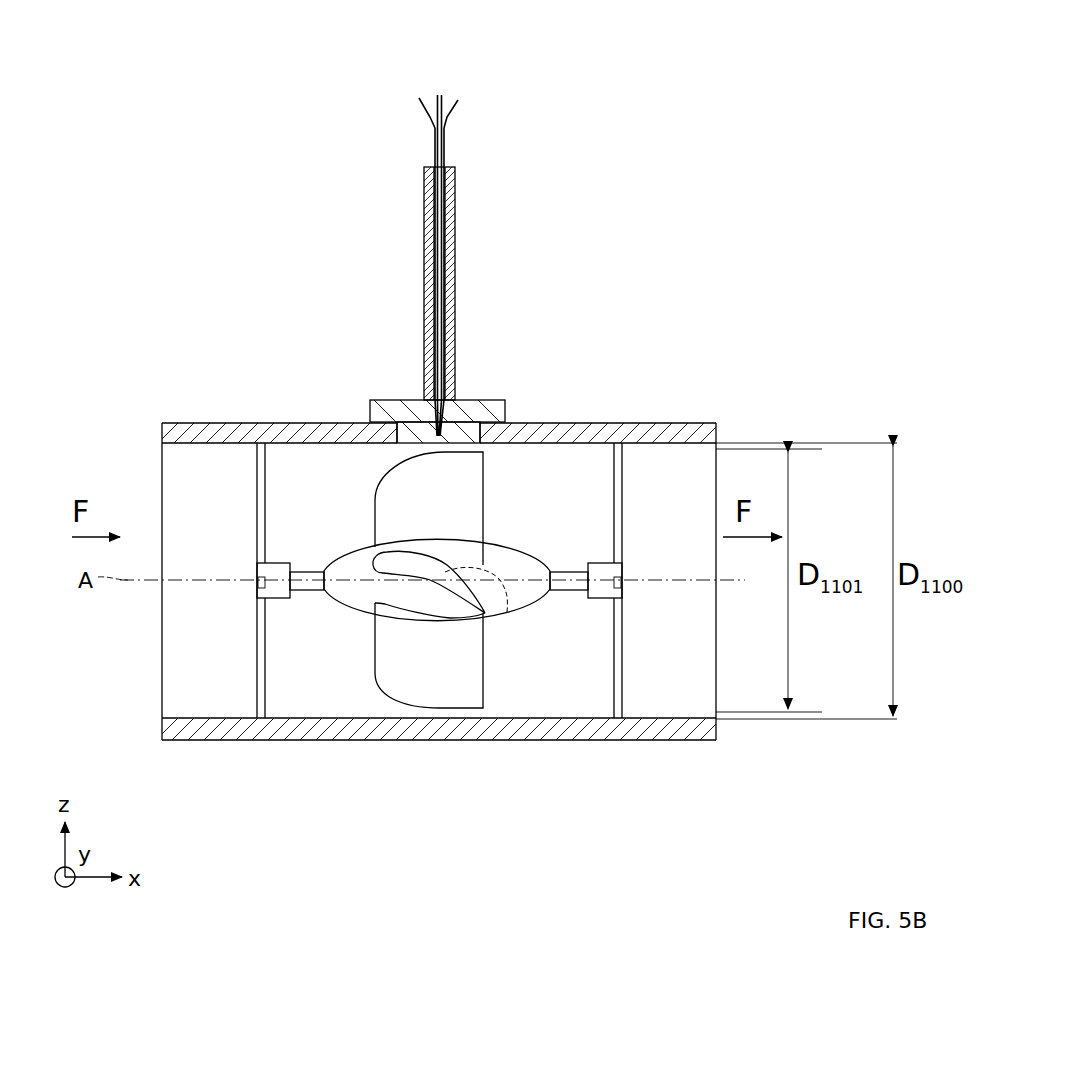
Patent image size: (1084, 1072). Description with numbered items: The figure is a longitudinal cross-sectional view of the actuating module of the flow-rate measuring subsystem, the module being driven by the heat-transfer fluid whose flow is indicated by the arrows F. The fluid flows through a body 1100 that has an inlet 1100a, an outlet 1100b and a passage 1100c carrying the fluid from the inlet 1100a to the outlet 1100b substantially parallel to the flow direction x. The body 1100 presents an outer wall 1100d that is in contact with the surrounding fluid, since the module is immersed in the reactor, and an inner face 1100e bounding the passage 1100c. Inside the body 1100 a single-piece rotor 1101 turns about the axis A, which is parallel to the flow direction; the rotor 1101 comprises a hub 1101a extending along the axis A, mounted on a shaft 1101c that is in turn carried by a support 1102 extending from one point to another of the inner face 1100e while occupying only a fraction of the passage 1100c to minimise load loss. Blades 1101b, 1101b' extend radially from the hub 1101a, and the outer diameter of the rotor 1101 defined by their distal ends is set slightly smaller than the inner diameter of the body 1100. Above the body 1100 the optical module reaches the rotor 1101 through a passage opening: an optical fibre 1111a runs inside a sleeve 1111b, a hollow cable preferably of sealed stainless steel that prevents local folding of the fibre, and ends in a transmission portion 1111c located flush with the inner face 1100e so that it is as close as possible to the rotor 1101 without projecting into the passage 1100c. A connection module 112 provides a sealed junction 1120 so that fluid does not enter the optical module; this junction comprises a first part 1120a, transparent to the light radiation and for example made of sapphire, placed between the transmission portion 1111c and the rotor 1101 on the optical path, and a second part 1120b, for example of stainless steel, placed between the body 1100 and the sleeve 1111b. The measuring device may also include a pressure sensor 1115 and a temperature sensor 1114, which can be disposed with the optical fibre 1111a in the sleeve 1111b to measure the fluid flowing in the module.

The body 1100 is at (435, 520).
The inlet 1100a is at (161, 630).
The outlet 1100b is at (716, 483).
The passage 1100c is at (188, 673).
The outer wall 1100d is at (182, 421).
The inner face 1100e is at (183, 446).
The rotor 1101 is at (476, 637).
The hub 1101a is at (529, 591).
The blade 1101b is at (414, 623).
The blade 1101b' is at (482, 695).
The shaft 1101c is at (573, 586).
The support 1102 is at (261, 656).
The optical fibre 1111a is at (440, 94).
The sleeve 1111b is at (450, 200).
The transmission portion 1111c is at (417, 440).
The temperature sensor 1114 is at (458, 99).
The pressure sensor 1115 is at (418, 94).
The sealed junction 1120 is at (537, 382).
The connection module 112 is at (537, 382).
The first part 1120a is at (467, 437).
The second part 1120b is at (458, 413).